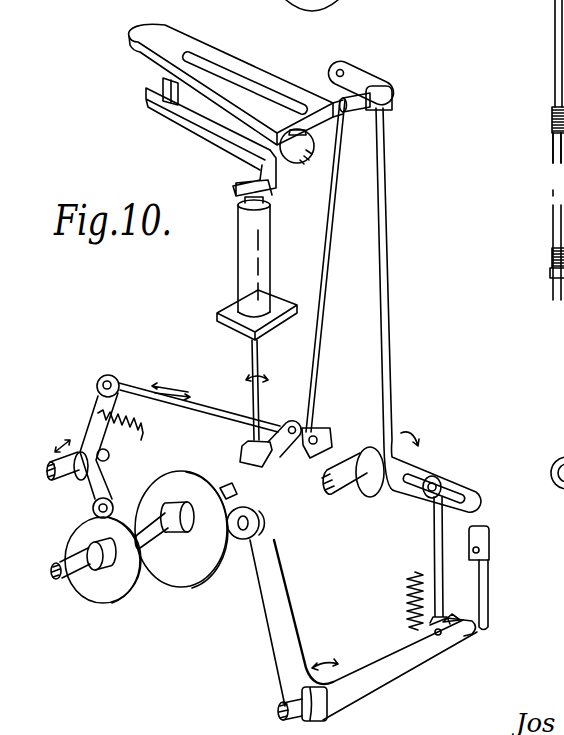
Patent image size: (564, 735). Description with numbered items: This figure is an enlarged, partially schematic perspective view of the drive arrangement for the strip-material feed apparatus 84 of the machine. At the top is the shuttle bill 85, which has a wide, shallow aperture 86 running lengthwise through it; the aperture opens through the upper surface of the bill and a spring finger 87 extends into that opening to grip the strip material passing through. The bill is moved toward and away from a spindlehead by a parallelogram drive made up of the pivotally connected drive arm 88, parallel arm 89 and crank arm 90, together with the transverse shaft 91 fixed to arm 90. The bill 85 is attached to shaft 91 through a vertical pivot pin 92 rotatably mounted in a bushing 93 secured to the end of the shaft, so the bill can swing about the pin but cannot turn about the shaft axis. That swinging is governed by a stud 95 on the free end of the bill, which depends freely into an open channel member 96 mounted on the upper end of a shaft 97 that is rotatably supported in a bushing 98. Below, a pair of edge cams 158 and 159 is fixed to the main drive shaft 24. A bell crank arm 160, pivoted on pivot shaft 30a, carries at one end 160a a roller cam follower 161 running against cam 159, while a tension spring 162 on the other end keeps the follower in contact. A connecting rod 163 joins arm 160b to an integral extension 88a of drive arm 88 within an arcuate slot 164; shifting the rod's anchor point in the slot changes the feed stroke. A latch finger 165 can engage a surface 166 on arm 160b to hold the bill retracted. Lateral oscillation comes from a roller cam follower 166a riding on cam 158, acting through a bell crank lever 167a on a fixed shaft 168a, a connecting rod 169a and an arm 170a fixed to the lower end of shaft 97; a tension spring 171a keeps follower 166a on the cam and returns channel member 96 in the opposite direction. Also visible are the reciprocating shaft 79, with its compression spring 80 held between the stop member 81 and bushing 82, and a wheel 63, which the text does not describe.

The main drive shaft 24 is at (57, 575).
The pivot shaft 30a is at (279, 703).
The wheel 63 is at (330, 8).
The reciprocating rod or shaft 79 is at (554, 57).
The compression spring 80 is at (553, 130).
The stop member 81 is at (553, 117).
The bushing 82 is at (556, 275).
The feed apparatus 84 is at (209, 104).
The shuttle bill 85 is at (227, 48).
The aperture 86 is at (350, 123).
The spring finger 87 is at (262, 92).
The drive arm 88 is at (372, 270).
The integral extension 88a is at (484, 490).
The parallel arm 89 is at (328, 212).
The crank arm 90 is at (374, 76).
The transverse shaft 91 is at (372, 113).
The pivot pin 92 is at (290, 160).
The bushing 93 is at (270, 152).
The stud 95 is at (170, 98).
The open channel member 96 is at (193, 135).
The shaft 97 is at (256, 347).
The bushing 98 is at (270, 271).
The edge cam 158 is at (113, 599).
The edge cam 159 is at (200, 587).
The bell crank arm 160 is at (390, 690).
The end of bell crank arm 160a is at (275, 570).
The arm of bell crank 160b is at (432, 648).
The roller cam follower 161 is at (260, 522).
The tension spring 162 is at (407, 593).
The connecting rod 163 is at (434, 543).
The arcuate slot 164 is at (450, 490).
The latch finger 165 is at (489, 602).
The surface 166 is at (452, 618).
The roller cam follower 166a is at (98, 509).
The bell crank lever 167a is at (76, 422).
The fixed shaft 168a is at (45, 470).
The connecting rod 169a is at (203, 403).
The arm 170a is at (278, 449).
The tension spring 171a is at (141, 440).